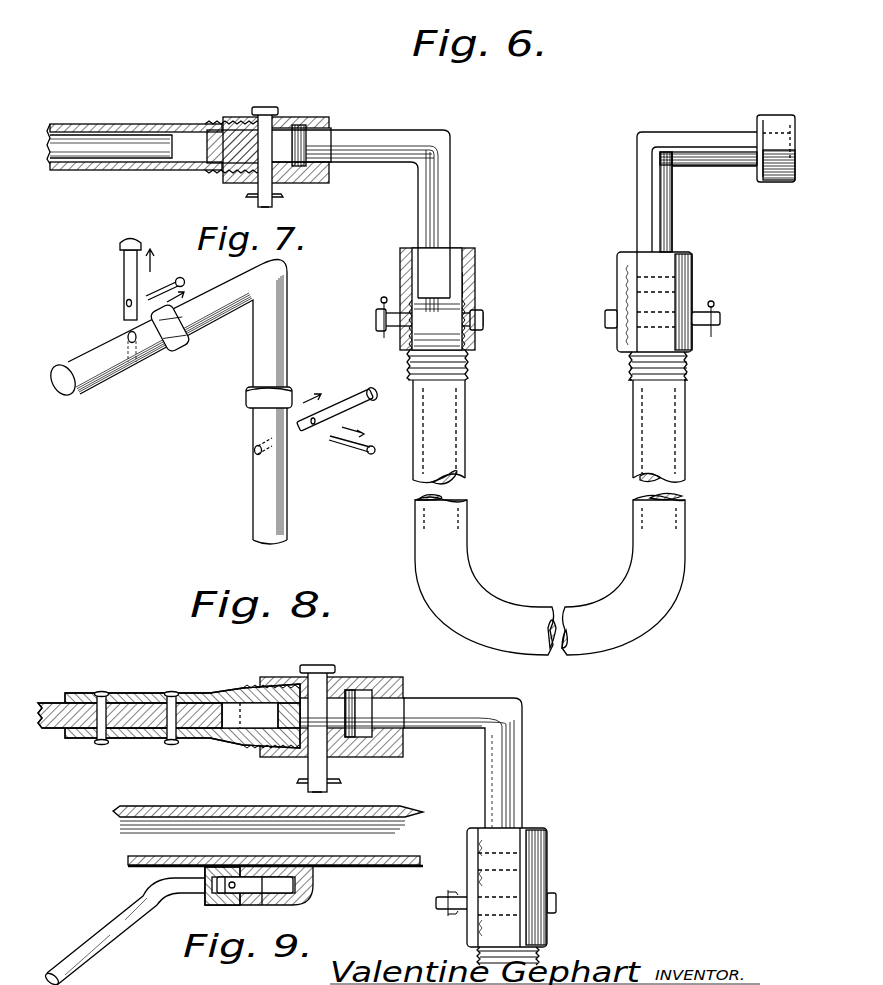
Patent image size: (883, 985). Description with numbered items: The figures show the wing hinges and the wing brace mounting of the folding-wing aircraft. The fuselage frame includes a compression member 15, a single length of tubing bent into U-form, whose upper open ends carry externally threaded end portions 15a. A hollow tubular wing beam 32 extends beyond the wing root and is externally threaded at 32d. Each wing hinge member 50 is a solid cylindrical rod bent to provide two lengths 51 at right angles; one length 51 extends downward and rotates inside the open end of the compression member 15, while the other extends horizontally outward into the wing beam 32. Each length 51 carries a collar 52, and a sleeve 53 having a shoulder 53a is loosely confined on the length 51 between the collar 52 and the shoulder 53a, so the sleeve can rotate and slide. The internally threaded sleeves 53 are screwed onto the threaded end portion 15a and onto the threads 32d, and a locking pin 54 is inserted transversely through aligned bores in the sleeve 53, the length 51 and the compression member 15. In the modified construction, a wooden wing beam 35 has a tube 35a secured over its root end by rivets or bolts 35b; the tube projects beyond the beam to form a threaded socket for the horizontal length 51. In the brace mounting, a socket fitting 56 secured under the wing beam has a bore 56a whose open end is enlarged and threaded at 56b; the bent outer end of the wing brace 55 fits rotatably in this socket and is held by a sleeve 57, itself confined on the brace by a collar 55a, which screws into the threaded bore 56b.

In FIG. 6, the compression member 15 is at (468, 441).
In FIG. 6, the end portions of the compression member 15a is at (466, 371).
In FIG. 8, the end portions of the compression member 15a is at (540, 952).
In FIG. 6, the wing beam 32 is at (146, 124).
In FIG. 8, the wing beam 32 is at (167, 806).
In FIG. 6, the external screw threads of the wing beam 32d is at (208, 124).
In FIG. 8, the wooden wing beam 35 is at (42, 704).
In FIG. 8, the tube 35a is at (213, 692).
In FIG. 8, the rivets or bolts 35b is at (171, 745).
In FIG. 6, the wing hinge member 50 is at (426, 138).
In FIG. 7, the wing hinge member 50 is at (282, 268).
In FIG. 8, the wing hinge member 50 is at (524, 716).
In FIG. 6, the lengths 51 is at (346, 138).
In FIG. 7, the lengths 51 is at (206, 322).
In FIG. 8, the lengths 51 is at (438, 731).
In FIG. 6, the collars 52 is at (305, 127).
In FIG. 7, the collars 52 is at (166, 352).
In FIG. 8, the collars 52 is at (385, 676).
In FIG. 6, the sleeves 53 is at (281, 118).
In FIG. 8, the sleeves 53 is at (546, 873).
In FIG. 6, the shoulder 53a is at (316, 183).
In FIG. 8, the shoulder 53a is at (375, 758).
In FIG. 6, the locking pin 54 is at (277, 188).
In FIG. 7, the locking pin 54 is at (345, 402).
In FIG. 8, the locking pin 54 is at (321, 670).
In FIG. 9, the wing brace 55 is at (85, 955).
In FIG. 9, the collars 55a is at (208, 904).
In FIG. 9, the socket fitting 56 is at (303, 890).
In FIG. 9, the bore 56a is at (310, 866).
In FIG. 9, the enlarged internally threaded bore 56b is at (263, 905).
In FIG. 9, the sleeve 57 is at (205, 875).